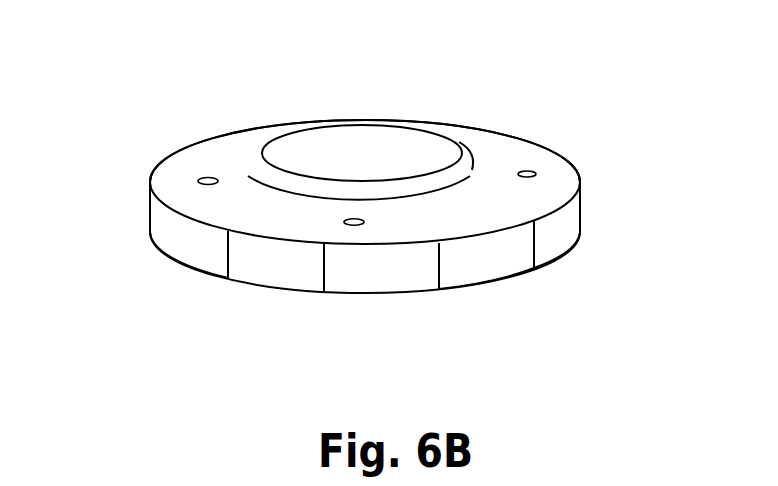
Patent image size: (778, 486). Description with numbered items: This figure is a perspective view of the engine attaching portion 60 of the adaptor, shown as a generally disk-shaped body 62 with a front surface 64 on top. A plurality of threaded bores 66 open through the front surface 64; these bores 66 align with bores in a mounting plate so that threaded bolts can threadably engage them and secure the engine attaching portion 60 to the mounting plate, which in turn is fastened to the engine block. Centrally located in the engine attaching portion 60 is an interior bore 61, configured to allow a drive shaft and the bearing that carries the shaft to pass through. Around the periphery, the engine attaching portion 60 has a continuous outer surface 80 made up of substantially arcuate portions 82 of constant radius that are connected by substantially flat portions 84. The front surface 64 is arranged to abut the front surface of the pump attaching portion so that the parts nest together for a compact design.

The engine attaching portion 60 is at (148, 100).
The interior bore 61 is at (370, 160).
The base body 62 is at (263, 288).
The front surface 64 is at (487, 155).
The threaded bores 66 is at (538, 172).
The continuous outer surface 80 is at (178, 234).
The substantially arcuate portions 82 is at (487, 253).
The substantially flat portions 84 is at (562, 234).